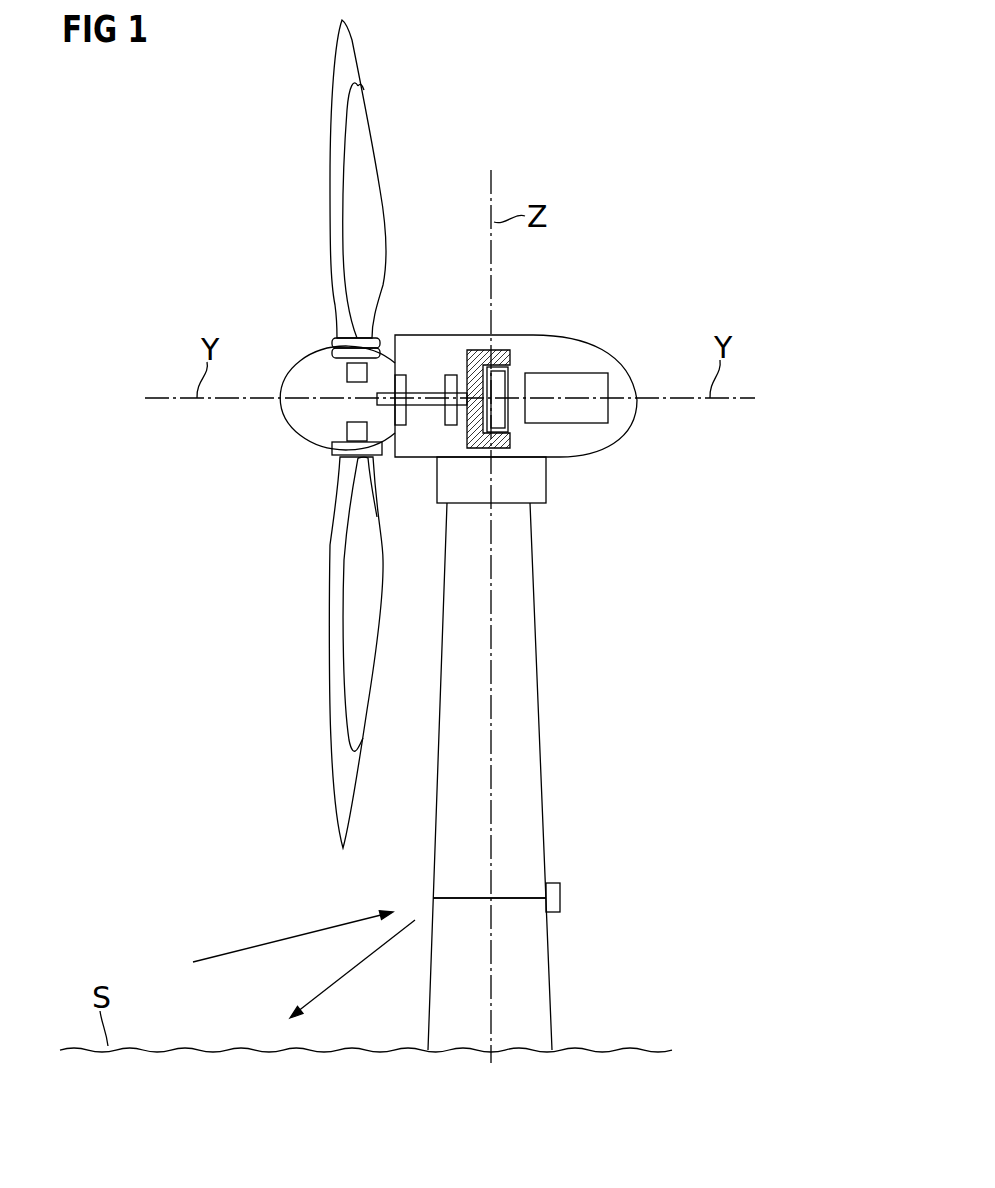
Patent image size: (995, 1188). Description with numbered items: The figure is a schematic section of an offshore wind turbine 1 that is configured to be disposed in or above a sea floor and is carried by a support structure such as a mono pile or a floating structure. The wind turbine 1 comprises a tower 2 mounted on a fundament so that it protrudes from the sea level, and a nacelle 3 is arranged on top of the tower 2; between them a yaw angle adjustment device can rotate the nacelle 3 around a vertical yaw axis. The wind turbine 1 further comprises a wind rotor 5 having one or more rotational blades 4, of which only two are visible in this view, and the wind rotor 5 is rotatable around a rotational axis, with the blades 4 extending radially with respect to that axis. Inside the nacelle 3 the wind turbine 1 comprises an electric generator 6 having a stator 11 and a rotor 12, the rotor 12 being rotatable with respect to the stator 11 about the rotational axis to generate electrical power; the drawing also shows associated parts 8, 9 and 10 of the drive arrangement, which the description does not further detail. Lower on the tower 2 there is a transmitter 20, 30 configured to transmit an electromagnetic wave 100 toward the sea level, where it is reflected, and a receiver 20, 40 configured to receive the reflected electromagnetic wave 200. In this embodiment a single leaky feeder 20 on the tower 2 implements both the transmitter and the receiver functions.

The wind turbine 1 is at (678, 212).
The tower 2 is at (532, 735).
The nacelle 3 is at (607, 342).
The rotational blades 4 is at (333, 175).
The wind rotor 5 is at (283, 428).
The electric generator 6 is at (522, 355).
The bearing 8 is at (448, 375).
The rotor shaft 9 is at (415, 400).
The sensor arrangement 10 is at (548, 895).
The stator 11 is at (502, 377).
The rotor 12 is at (477, 355).
The leaky feeder 20 is at (527, 900).
The transmitter 30 is at (604, 893).
The receiver 40 is at (560, 895).
The electromagnetic wave 100 is at (352, 968).
The reflected electromagnetic wave 200 is at (278, 938).